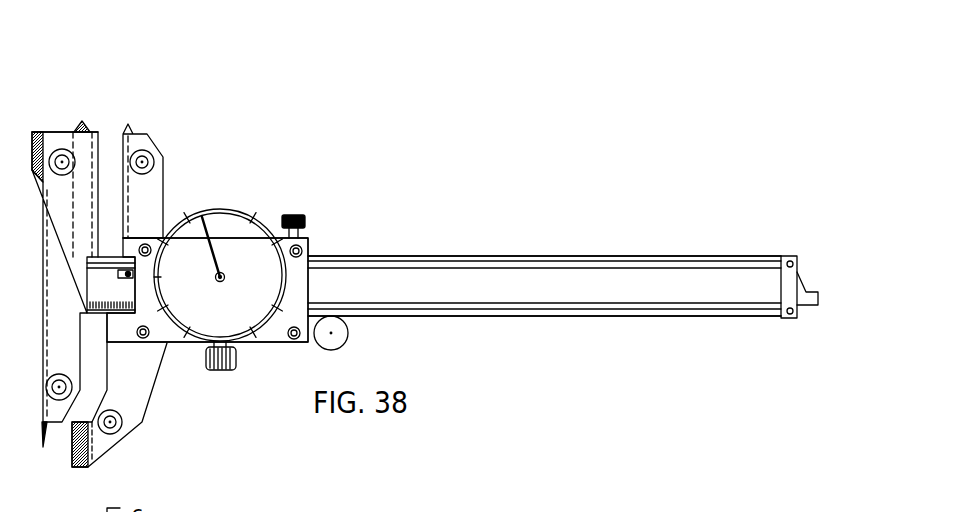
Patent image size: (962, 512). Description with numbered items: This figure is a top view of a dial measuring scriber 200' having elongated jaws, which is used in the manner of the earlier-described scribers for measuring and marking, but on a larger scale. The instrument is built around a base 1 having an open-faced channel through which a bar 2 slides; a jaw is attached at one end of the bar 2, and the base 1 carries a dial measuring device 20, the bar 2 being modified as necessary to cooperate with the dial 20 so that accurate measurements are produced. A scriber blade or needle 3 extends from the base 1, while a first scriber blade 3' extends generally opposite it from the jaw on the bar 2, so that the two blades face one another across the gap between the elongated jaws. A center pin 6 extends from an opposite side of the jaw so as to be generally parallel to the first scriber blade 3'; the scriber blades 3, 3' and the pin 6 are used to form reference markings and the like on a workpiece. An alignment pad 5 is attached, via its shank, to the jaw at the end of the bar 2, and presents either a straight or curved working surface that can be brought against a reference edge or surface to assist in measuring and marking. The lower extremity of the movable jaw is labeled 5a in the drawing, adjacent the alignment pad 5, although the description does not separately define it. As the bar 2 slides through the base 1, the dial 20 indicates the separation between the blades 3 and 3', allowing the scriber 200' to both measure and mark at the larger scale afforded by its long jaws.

The dial measuring scriber 200' is at (406, 224).
The base 1 is at (313, 250).
The bar 2 is at (618, 255).
The scriber blade or needle 3 is at (62, 462).
The first scriber blade 3' is at (211, 148).
The alignment pad 5 is at (37, 132).
The movable jaw measuring tip 5a is at (85, 465).
The center pin 6 is at (85, 126).
The dial measuring device 20 is at (237, 228).